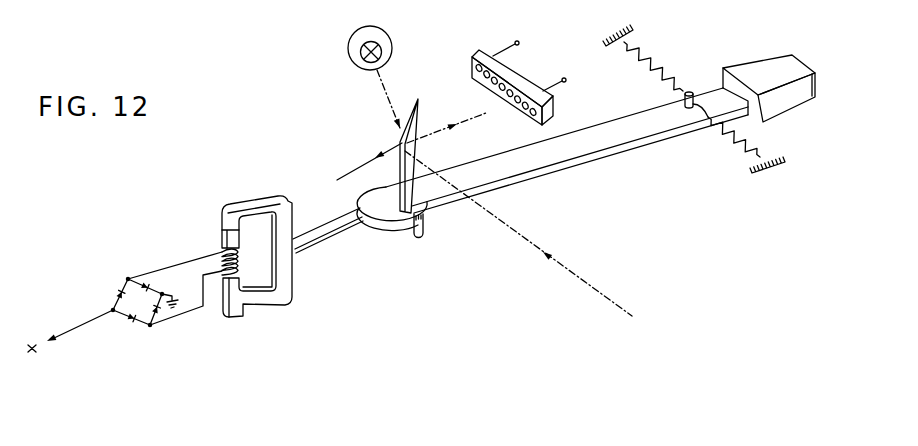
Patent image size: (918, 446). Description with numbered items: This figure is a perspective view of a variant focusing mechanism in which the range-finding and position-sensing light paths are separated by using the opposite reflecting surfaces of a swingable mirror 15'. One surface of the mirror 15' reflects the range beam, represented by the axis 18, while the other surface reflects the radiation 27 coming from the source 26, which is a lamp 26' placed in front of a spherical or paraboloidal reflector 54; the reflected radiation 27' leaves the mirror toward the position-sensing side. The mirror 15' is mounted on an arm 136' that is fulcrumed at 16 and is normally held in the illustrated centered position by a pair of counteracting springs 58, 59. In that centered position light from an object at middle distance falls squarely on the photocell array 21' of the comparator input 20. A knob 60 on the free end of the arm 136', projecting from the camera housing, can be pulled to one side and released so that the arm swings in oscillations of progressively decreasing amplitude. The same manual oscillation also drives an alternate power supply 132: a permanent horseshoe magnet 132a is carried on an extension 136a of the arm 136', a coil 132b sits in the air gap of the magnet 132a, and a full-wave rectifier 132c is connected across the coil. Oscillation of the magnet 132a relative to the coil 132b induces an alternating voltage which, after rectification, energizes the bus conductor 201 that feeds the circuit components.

The swingable mirror 15' is at (431, 150).
The fulcrum 16 is at (425, 228).
The range beam axis 18 is at (496, 100).
The comparator input 20 is at (519, 68).
The photocell array 21' is at (521, 79).
The source 26 is at (352, 35).
The lamp 26' is at (399, 48).
The radiation 27 is at (401, 96).
The reflected radiation 27' is at (369, 160).
The spherical or paraboloidal reflector 54 is at (374, 29).
The counteracting spring 58 is at (655, 66).
The counteracting spring 59 is at (735, 143).
The knob 60 is at (760, 70).
The alternate power supply 132 is at (183, 286).
The permanent horseshoe magnet 132a is at (254, 205).
The coil 132b is at (223, 250).
The full-wave rectifier 132c is at (138, 298).
The arm 136' is at (552, 159).
The extension of arm 136a is at (332, 247).
The bus conductor 201 is at (82, 326).